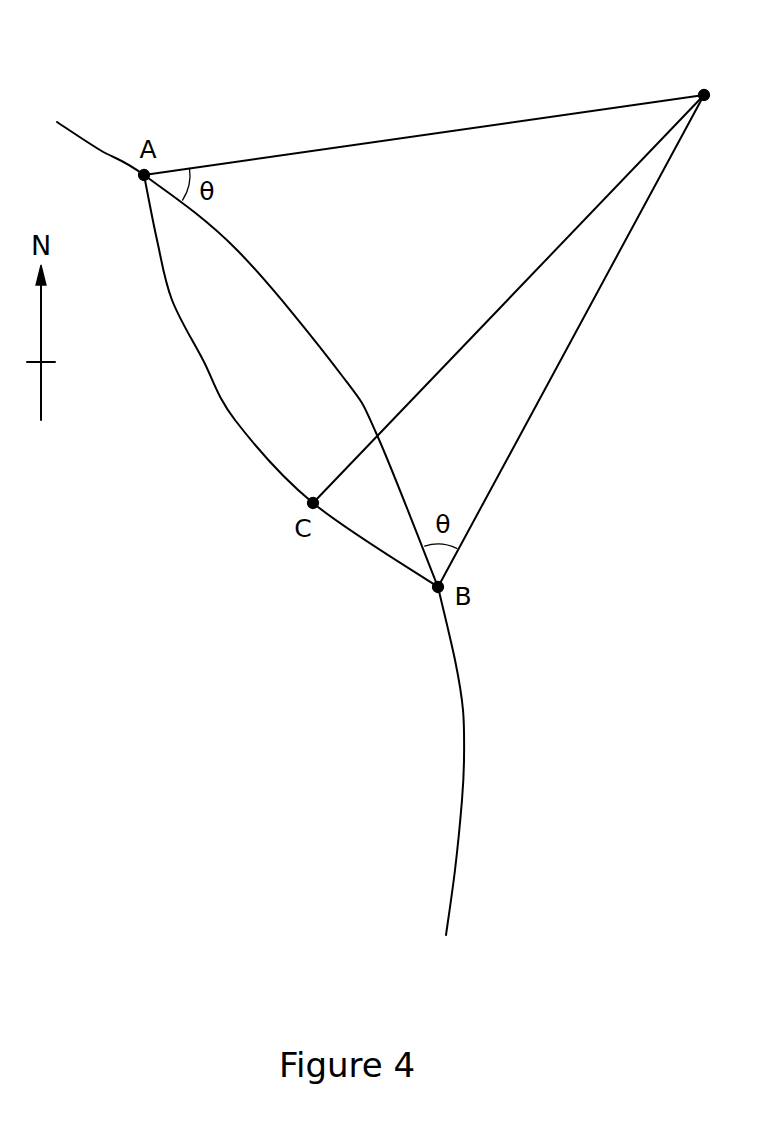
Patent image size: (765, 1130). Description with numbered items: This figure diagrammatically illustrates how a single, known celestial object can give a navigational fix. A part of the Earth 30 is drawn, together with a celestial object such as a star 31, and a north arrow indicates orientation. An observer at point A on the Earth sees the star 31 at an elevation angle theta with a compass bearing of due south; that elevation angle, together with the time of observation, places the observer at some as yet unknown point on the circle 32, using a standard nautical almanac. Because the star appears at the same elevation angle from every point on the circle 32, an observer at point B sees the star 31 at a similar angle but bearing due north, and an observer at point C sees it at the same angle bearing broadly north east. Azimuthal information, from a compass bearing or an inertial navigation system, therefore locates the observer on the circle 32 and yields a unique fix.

The part of the Earth 30 is at (463, 710).
The star 31 is at (703, 86).
The circle 32 is at (232, 415).